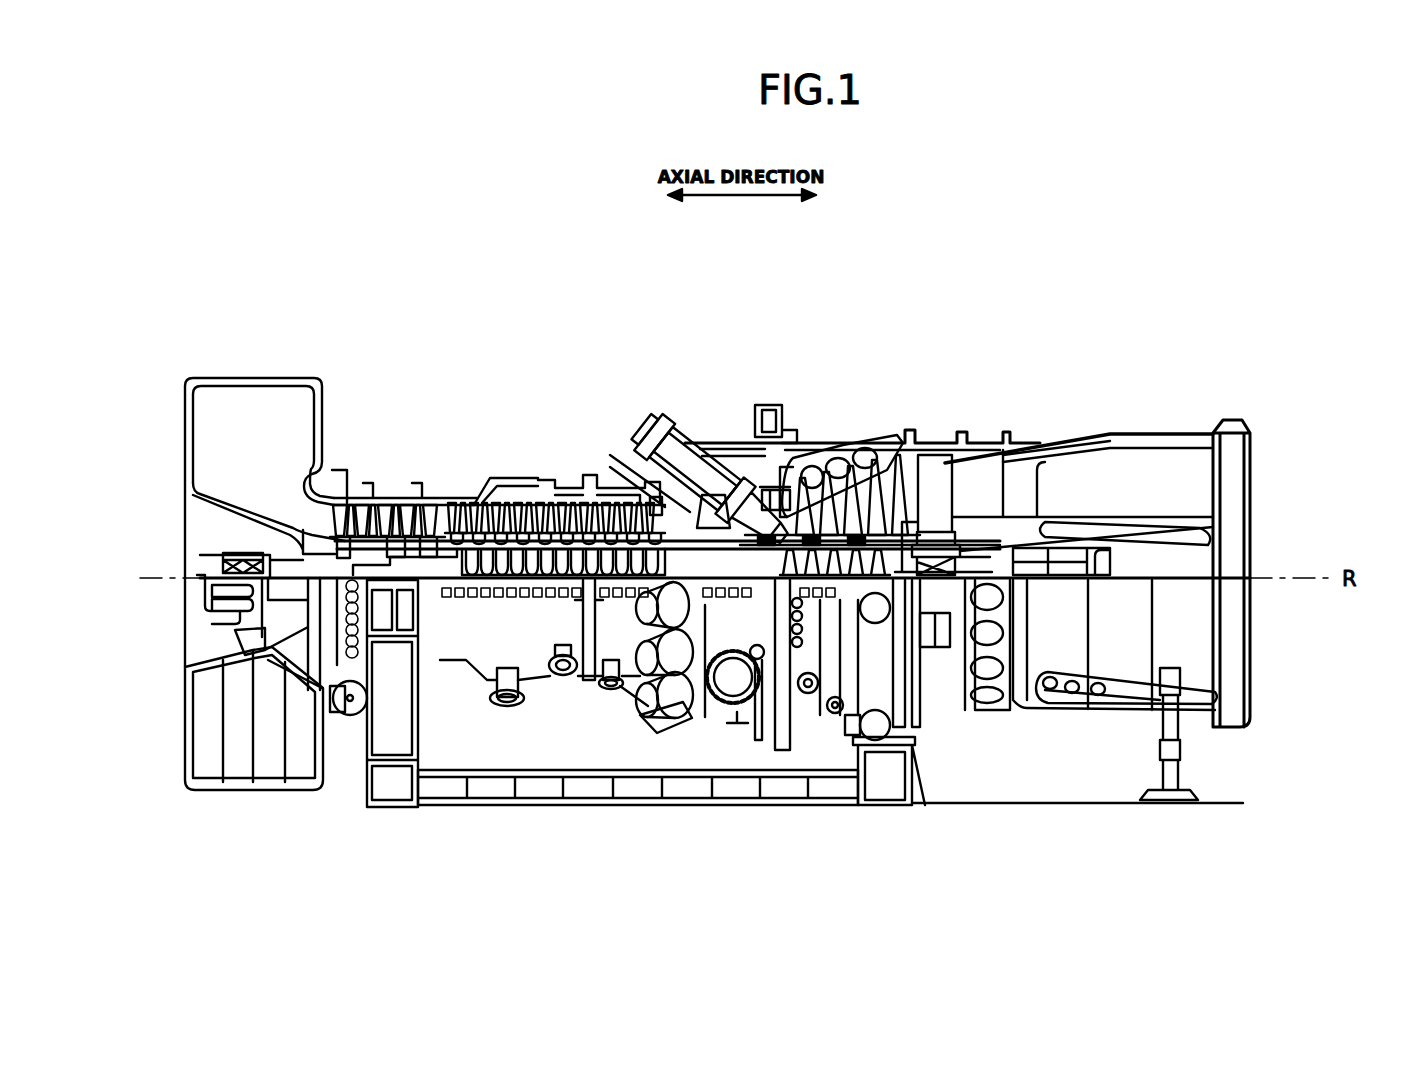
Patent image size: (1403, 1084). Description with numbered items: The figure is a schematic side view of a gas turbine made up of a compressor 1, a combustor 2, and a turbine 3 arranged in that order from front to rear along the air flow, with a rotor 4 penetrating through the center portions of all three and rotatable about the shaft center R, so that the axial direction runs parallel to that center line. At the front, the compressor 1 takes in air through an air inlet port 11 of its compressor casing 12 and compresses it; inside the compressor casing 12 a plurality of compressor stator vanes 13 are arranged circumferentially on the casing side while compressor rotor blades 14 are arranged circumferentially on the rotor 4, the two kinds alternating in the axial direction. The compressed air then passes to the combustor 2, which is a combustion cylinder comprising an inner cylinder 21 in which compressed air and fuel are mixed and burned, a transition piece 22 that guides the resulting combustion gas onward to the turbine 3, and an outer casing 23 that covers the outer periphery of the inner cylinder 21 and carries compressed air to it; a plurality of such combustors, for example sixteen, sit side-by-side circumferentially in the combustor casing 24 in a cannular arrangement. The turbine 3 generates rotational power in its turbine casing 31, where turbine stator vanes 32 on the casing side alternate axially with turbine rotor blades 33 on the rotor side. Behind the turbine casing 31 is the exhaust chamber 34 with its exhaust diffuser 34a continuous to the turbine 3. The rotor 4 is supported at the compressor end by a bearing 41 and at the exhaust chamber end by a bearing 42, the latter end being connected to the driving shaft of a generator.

The compressor 1 is at (395, 450).
The combustor 2 is at (664, 411).
The turbine 3 is at (910, 428).
The rotor 4 is at (690, 550).
The air inlet port 11 is at (200, 438).
The compressor casing 12 is at (565, 503).
The compressor stator vane 13 is at (403, 505).
The compressor rotor blade 14 is at (475, 500).
The inner cylinder 21 is at (686, 445).
The transition piece 22 is at (722, 470).
The outer casing 23 is at (658, 432).
The combustor casing 24 is at (728, 442).
The turbine casing 31 is at (845, 447).
The turbine stator vane 32 is at (780, 470).
The turbine rotor blade 33 is at (796, 472).
The exhaust chamber 34 is at (1110, 434).
The exhaust diffuser 34a is at (992, 482).
The bearing 41 is at (210, 563).
The bearing 42 is at (1180, 527).